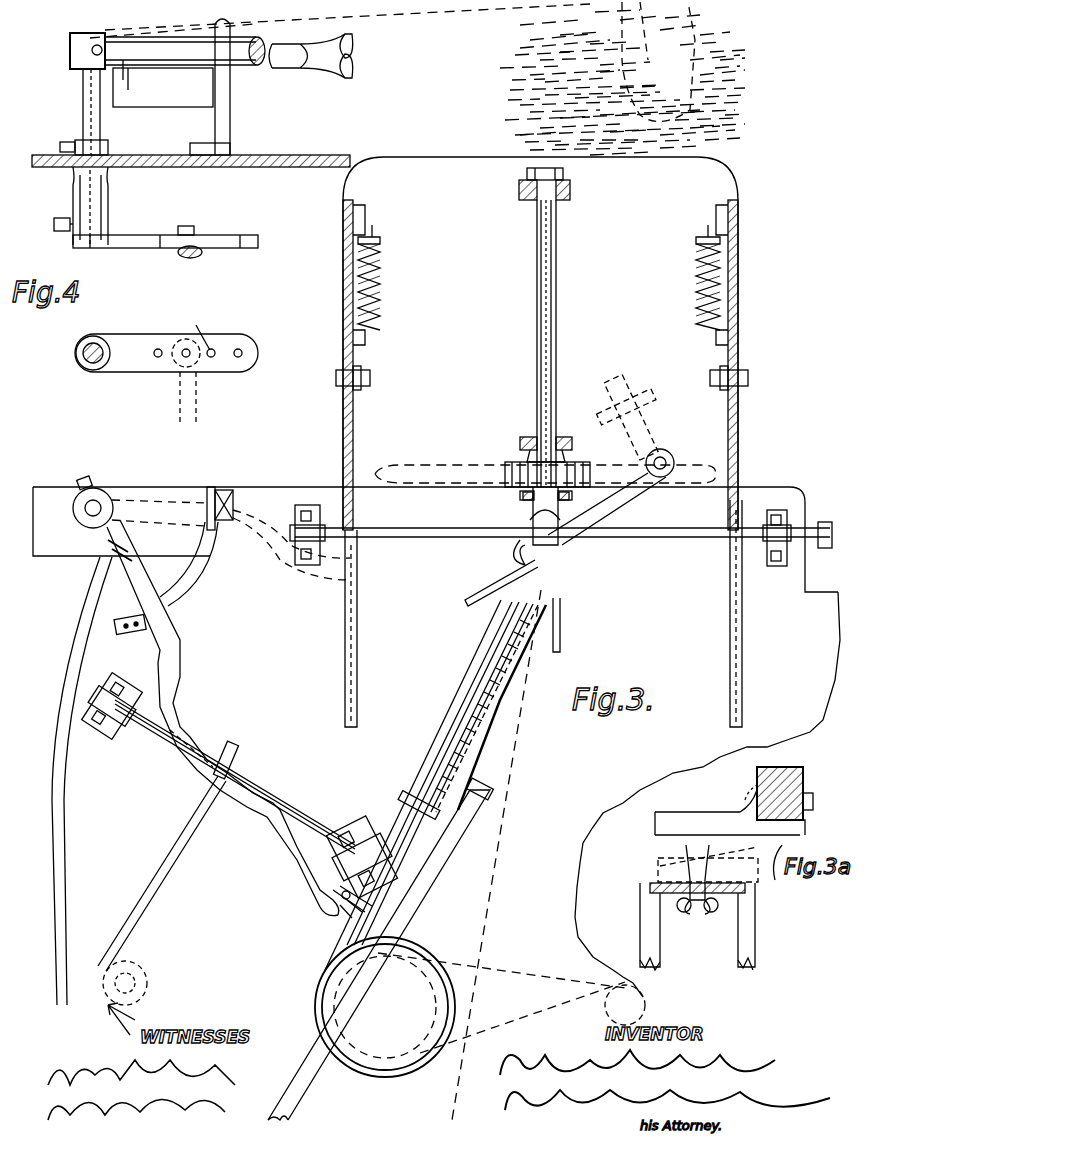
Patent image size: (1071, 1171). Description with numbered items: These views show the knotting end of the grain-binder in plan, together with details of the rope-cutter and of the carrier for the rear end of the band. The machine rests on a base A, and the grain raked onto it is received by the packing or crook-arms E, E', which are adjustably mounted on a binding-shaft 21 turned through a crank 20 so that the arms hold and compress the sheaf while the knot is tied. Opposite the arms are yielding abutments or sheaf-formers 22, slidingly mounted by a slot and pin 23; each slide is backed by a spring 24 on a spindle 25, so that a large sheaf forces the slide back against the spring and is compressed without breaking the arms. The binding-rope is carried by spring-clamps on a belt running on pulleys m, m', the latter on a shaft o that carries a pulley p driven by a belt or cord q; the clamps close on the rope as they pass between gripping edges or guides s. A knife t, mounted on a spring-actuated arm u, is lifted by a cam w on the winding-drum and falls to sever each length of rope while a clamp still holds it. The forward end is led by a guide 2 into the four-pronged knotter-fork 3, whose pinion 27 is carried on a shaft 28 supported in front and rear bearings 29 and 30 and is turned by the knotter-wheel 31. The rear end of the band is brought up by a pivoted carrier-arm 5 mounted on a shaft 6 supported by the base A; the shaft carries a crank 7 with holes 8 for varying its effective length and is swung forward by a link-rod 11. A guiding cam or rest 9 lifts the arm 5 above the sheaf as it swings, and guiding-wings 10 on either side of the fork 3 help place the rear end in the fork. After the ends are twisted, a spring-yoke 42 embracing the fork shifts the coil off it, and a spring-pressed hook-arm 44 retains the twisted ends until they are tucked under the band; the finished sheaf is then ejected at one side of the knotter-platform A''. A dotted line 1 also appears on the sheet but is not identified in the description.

In FIG. 3, the dashed reference line 1 is at (489, 903).
In FIG. 3, the guide 2 is at (555, 595).
In FIG. 3, the knotter-fork 3 is at (530, 505).
In FIG. 4, the carrier-arm 5 is at (248, 70).
In FIG. 3, the carrier-arm 5 is at (250, 814).
In FIG. 4, the shaft 6 is at (82, 95).
In FIG. 4, the crank 7 is at (136, 244).
In FIG. 4, the holes 8 is at (160, 350).
In FIG. 4, the guiding cam or rest 9 is at (163, 84).
In FIG. 3, the guiding cam or rest 9 is at (200, 572).
In FIG. 3, the guiding-wings 10 is at (476, 600).
In FIG. 4, the link-rod 11 is at (191, 259).
In FIG. 3, the crank 20 is at (828, 525).
In FIG. 3, the binding-shaft 21 is at (655, 540).
In FIG. 3, the yielding abutments or sheaf-formers 22 is at (365, 520).
In FIG. 3, the slot and pin 23 is at (542, 395).
In FIG. 3, the spring 24 is at (380, 312).
In FIG. 3, the spindle 25 is at (373, 230).
In FIG. 3, the pinion 27 is at (504, 475).
In FIG. 3, the shaft 28 is at (536, 345).
In FIG. 3, the front bearing 29 is at (519, 440).
In FIG. 3, the rear bearing 30 is at (520, 203).
In FIG. 3, the knotter-wheel 31 is at (410, 466).
In FIG. 3, the spring-yoke 42 is at (519, 494).
In FIG. 3, the hook-arm 44 is at (512, 553).
In FIG. 4, the base A is at (191, 150).
In FIG. 3, the base A is at (436, 746).
In FIG. 3, the knotter-platform A'' is at (540, 343).
In FIG. 3, the crook-arms E is at (752, 613).
In FIG. 3, the crook-arm E' is at (366, 628).
In FIG. 3, the pulley m is at (620, 455).
In FIG. 3, the pulley m' is at (362, 852).
In FIG. 3, the shaft o is at (312, 805).
In FIG. 3, the pulley p is at (238, 756).
In FIG. 3, the belt or cord q is at (160, 882).
In FIG. 3, the gripping edges or guides s is at (425, 760).
In FIG. 3A, the gripping edges or guides s is at (655, 882).
In FIG. 3, the knife t is at (405, 800).
In FIG. 3A, the knife t is at (655, 822).
In FIG. 3, the arm u is at (405, 904).
In FIG. 3A, the arm u is at (805, 775).
In FIG. 3, the cam w is at (418, 945).